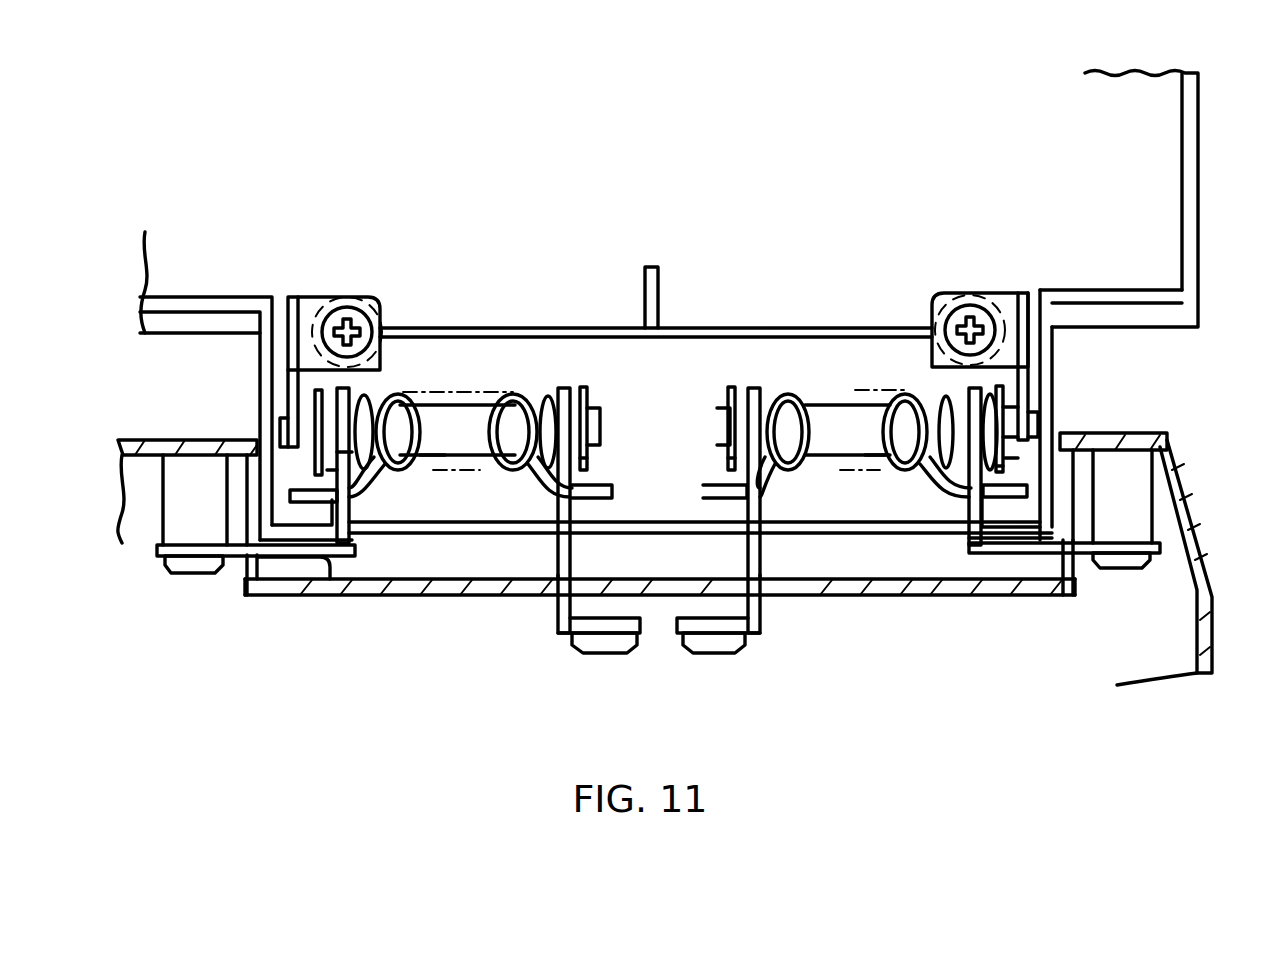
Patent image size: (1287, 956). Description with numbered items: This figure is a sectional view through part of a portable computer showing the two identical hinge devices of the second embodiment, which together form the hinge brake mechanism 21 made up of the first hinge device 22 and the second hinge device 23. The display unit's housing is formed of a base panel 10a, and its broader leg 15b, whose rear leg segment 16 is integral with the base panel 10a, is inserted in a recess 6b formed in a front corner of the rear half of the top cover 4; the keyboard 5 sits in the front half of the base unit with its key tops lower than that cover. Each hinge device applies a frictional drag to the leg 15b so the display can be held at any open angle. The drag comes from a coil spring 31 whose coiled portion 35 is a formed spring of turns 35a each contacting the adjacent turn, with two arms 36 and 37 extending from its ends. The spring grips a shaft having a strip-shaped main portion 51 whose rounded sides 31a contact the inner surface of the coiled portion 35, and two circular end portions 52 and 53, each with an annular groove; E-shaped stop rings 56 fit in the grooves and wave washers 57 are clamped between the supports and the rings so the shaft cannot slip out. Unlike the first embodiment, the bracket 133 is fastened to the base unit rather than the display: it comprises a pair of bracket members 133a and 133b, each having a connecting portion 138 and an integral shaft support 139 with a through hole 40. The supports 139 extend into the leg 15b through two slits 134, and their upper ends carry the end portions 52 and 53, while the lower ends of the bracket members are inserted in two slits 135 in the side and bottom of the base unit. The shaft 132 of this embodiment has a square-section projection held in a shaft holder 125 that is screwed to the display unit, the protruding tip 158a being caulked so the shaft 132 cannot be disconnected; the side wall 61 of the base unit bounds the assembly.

The top cover 4 is at (142, 440).
The keyboard 5 is at (760, 275).
The recess 6b is at (289, 594).
The base panel 10a is at (1198, 240).
The leg 15b is at (272, 342).
The rear leg segment 16 is at (460, 536).
The hinge brake mechanism 21 is at (596, 238).
The first hinge device 22 is at (718, 395).
The second hinge device 23 is at (593, 395).
The coil spring 31 is at (410, 459).
The rounded sides 31a is at (438, 428).
The coiled portion 35 is at (480, 457).
The turns 35a is at (515, 394).
The arm 36 is at (600, 500).
The arm 37 is at (293, 499).
The through hole 40 is at (396, 542).
The main portion 51 is at (448, 404).
The end portion 52 is at (355, 451).
The end portion 53 is at (600, 414).
The E-shaped stop ring 56 is at (330, 484).
The wave washer 57 is at (359, 398).
The side wall 61 is at (163, 516).
The shaft holder 125 is at (290, 404).
The shaft 132 is at (432, 457).
The bracket 133 is at (465, 646).
The bracket member 133a is at (332, 596).
The bracket member 133b is at (542, 610).
The slit 134 is at (343, 542).
The slit 135 is at (248, 572).
The connecting portion 138 is at (178, 574).
The shaft support 139 is at (314, 391).
The tip 158a is at (280, 428).